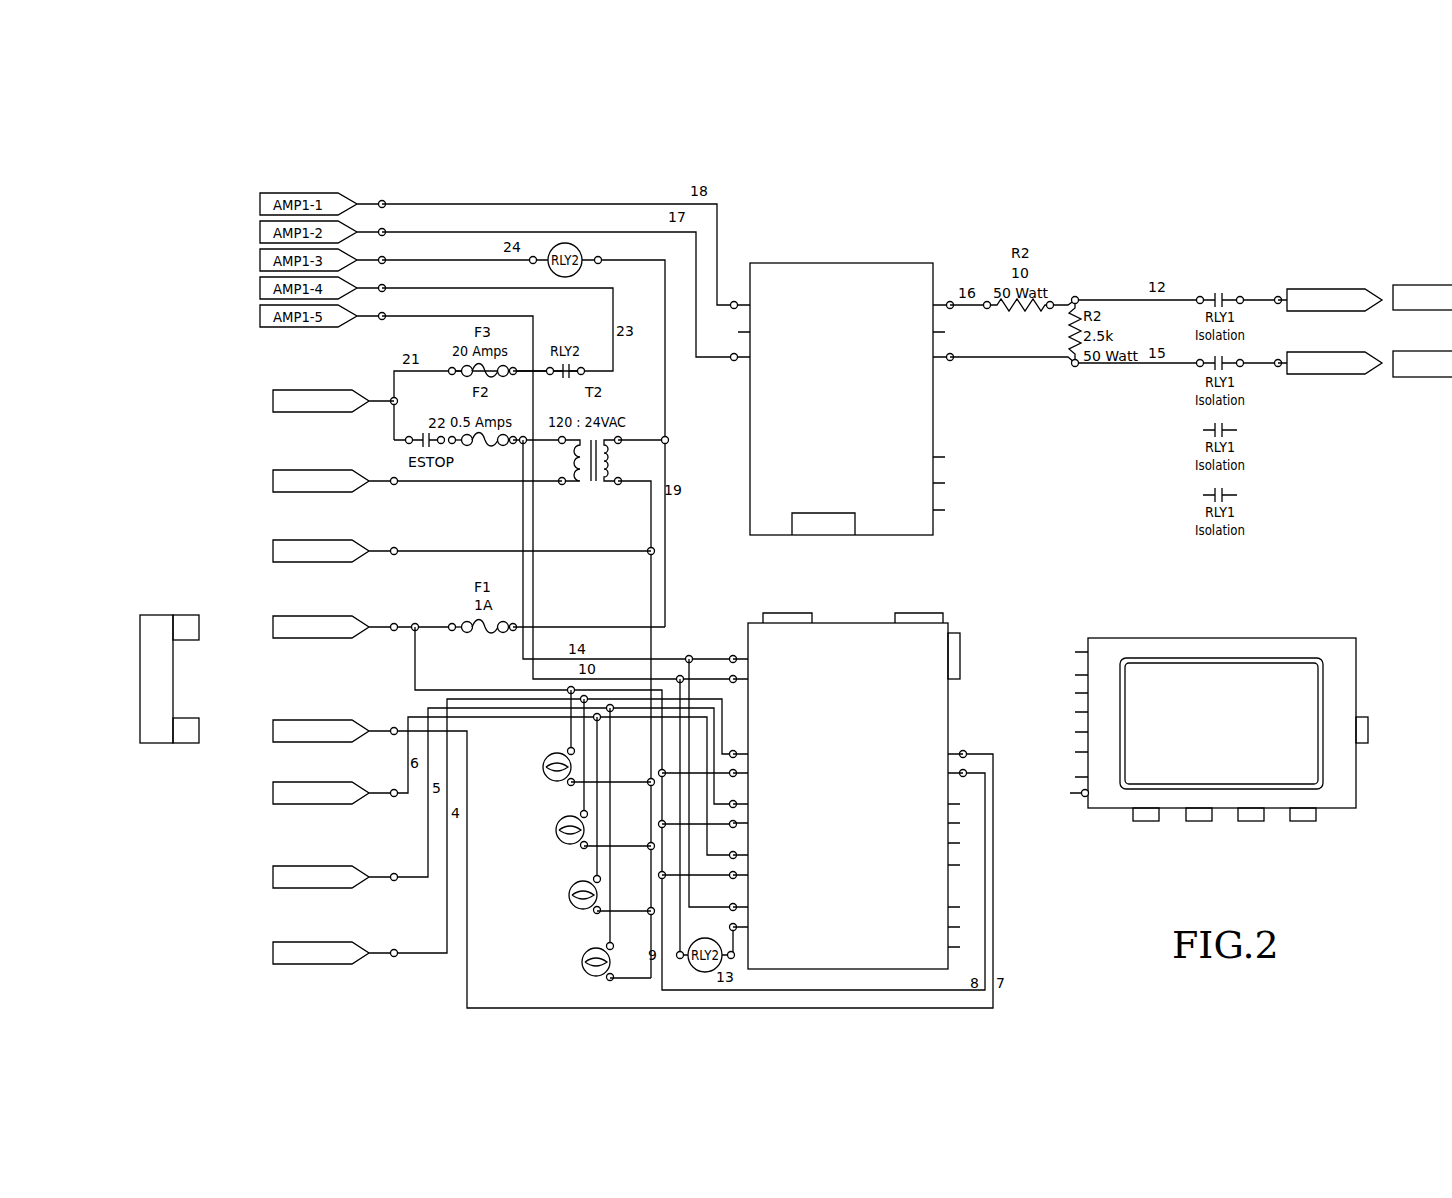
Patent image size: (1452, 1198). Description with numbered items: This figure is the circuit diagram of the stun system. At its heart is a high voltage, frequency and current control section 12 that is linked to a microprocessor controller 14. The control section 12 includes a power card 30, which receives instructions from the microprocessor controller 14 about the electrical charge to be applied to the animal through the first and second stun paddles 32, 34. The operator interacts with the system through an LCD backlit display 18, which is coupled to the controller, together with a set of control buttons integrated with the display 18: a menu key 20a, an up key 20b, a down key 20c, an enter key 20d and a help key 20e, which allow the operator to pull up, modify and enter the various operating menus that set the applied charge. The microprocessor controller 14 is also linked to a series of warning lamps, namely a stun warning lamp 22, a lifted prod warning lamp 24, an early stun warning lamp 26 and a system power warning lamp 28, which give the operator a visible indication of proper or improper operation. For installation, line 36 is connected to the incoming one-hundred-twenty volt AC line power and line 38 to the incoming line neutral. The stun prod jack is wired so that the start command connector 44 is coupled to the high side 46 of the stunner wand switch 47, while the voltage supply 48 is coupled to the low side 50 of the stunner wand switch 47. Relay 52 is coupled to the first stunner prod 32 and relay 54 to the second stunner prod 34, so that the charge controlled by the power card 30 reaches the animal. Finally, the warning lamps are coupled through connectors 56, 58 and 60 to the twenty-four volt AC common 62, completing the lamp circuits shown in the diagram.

The high voltage, frequency and current control section 12 is at (933, 258).
The microprocessor controller 14 is at (948, 712).
The operator display 18 is at (1328, 640).
The menu key 20a is at (1150, 824).
The up key 20b is at (1202, 824).
The down key 20c is at (1256, 824).
The enter key 20d is at (1308, 824).
The help key 20e is at (1369, 724).
The stun warning lamp 22 is at (538, 838).
The lifted prod warning lamp 24 is at (566, 972).
The early stun warning lamp 26 is at (544, 905).
The system power warning lamp 28 is at (538, 774).
The power card 30 is at (750, 448).
The first stun paddle 32 is at (1419, 292).
The second stun paddle 34 is at (1420, 366).
The line 36 is at (270, 406).
The line 38 is at (270, 486).
The start command connector 44 is at (270, 738).
The high side 46 is at (188, 745).
The stunner wand switch 47 is at (154, 616).
The voltage supply 48 is at (270, 634).
The low side 50 is at (184, 618).
The relay 52 is at (1287, 288).
The relay 54 is at (1292, 376).
The connector 56 is at (267, 798).
The connector 58 is at (267, 881).
The connector 60 is at (267, 956).
The 24 VAC common 62 is at (270, 556).